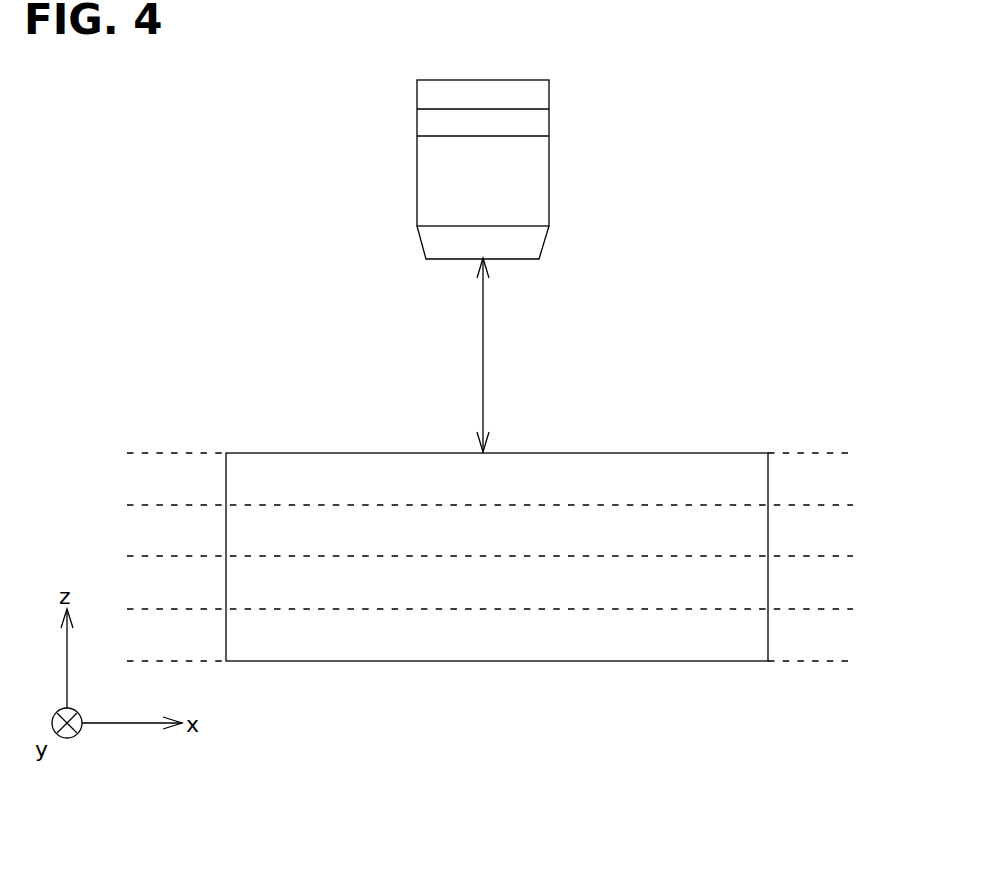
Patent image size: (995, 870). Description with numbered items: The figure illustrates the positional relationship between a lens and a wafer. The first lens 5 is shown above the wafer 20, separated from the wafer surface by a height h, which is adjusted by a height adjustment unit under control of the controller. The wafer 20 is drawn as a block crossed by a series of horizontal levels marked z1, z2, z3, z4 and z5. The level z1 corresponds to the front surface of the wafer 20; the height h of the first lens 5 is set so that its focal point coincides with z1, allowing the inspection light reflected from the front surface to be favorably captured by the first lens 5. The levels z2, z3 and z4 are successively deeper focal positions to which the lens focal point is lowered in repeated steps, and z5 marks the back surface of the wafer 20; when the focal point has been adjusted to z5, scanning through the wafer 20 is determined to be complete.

The first lens 5 is at (526, 92).
The wafer 20 is at (718, 480).
The height of the first lens h is at (495, 355).
The position of the front surface of the wafer z1 is at (513, 454).
The first intermediate focal position z2 is at (513, 506).
The second intermediate focal position z3 is at (513, 558).
The third intermediate focal position z4 is at (513, 609).
The position of the back surface of the wafer z5 is at (513, 662).